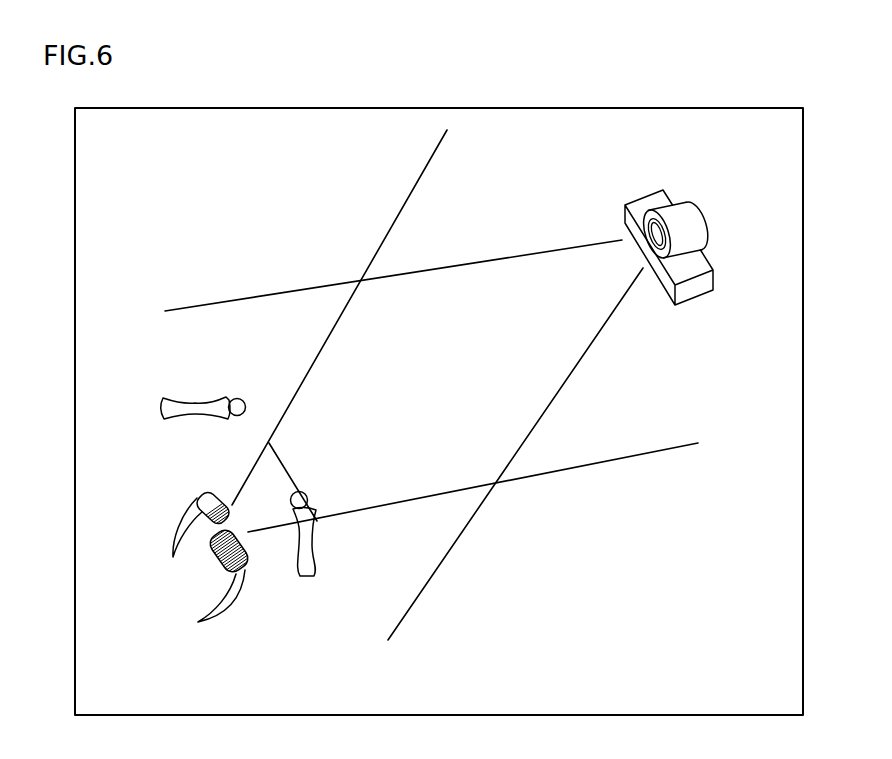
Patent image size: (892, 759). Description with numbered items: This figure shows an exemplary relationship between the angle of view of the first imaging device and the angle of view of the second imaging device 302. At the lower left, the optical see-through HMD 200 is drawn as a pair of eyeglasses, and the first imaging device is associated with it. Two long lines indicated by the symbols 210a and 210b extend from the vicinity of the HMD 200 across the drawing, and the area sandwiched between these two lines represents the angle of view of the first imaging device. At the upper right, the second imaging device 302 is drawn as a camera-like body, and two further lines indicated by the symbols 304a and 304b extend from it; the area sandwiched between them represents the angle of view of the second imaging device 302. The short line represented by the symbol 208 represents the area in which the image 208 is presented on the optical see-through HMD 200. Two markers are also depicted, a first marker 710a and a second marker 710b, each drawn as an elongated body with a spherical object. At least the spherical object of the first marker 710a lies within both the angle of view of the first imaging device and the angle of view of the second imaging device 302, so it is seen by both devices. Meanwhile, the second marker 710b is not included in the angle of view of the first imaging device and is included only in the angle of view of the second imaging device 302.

The optical see-through HMD 200 is at (222, 610).
The image 208 is at (288, 462).
The first line of the angle of view of the first imaging device 210a is at (402, 205).
The second line of the angle of view of the first imaging device 210b is at (597, 468).
The second imaging device 302 is at (663, 190).
The first line of the angle of view of the second imaging device 304a is at (265, 293).
The second line of the angle of view of the second imaging device 304b is at (442, 567).
The first marker 710a is at (308, 578).
The second marker 710b is at (235, 397).